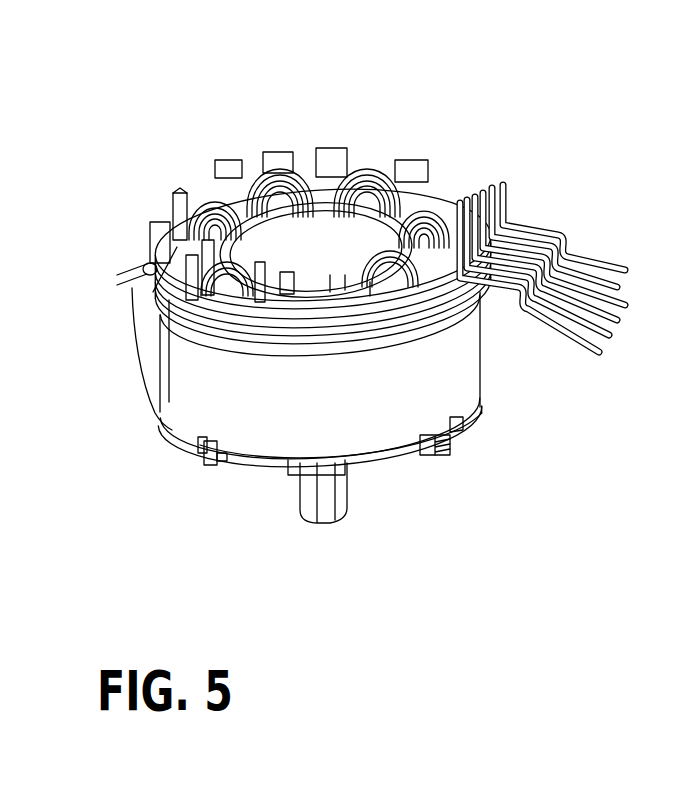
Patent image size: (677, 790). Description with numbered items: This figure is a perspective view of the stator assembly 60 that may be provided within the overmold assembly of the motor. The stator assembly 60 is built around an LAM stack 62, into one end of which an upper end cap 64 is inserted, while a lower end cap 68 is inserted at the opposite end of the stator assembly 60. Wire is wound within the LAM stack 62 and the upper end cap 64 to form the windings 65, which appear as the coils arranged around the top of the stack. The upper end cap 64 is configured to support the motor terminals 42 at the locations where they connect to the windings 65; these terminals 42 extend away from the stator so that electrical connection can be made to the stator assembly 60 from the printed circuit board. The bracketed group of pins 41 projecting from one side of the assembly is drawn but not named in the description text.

The stator assembly 60 is at (388, 128).
The windings 65 is at (277, 158).
The upper end cap 64 is at (180, 207).
The connector pins 41 is at (652, 258).
The LAM stack 62 is at (437, 393).
The motor terminals 42 is at (262, 278).
The lower end cap 68 is at (222, 460).